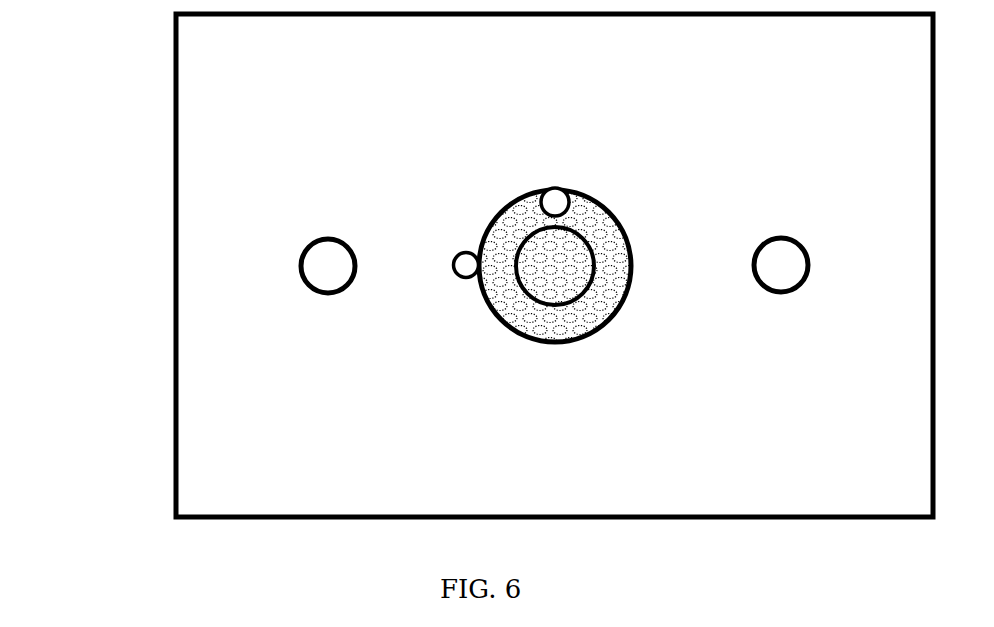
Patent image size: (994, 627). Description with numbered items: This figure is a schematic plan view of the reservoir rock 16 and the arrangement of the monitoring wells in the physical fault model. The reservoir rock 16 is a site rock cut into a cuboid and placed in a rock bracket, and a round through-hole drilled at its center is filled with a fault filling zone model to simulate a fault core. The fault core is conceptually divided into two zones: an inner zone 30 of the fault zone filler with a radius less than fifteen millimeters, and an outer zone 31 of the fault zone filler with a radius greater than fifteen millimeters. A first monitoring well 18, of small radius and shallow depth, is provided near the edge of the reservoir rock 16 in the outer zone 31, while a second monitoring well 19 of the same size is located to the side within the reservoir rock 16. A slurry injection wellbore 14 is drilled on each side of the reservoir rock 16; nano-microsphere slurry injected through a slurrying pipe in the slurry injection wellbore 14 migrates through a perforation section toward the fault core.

The slurry injection wellbore 14 is at (772, 252).
The reservoir rock 16 is at (230, 400).
The first monitoring well 18 is at (555, 202).
The second monitoring well 19 is at (466, 265).
The inner zone of the fault zone filler 30 is at (550, 293).
The outer zone of the fault zone filler 31 is at (547, 323).